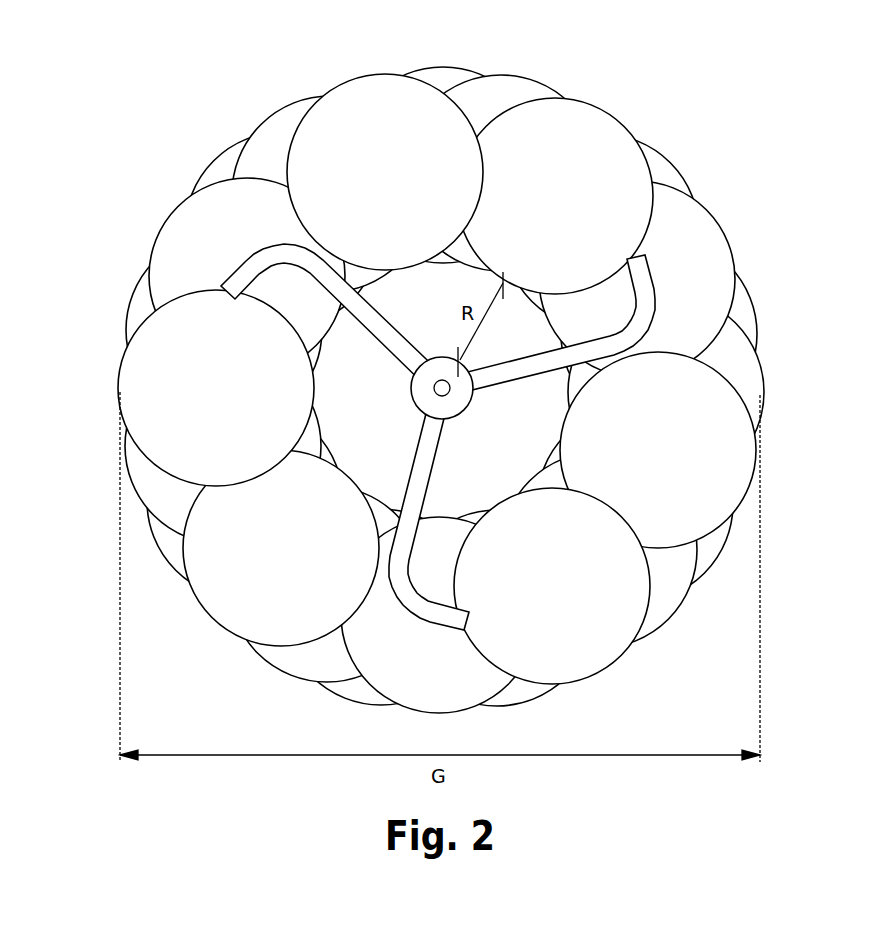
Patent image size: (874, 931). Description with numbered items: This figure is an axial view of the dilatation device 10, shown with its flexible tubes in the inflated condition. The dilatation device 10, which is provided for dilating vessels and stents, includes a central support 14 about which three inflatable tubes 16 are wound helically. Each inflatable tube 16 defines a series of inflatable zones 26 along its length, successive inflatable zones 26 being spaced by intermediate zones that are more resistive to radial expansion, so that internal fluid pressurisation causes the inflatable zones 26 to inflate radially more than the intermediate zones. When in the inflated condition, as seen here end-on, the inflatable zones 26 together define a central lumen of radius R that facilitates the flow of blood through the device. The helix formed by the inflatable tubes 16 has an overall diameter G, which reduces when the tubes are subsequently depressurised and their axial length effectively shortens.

The dilatation device 10 is at (440, 366).
The support 14 is at (475, 360).
The inflatable tube 16 is at (397, 320).
The inflatable zone 26 is at (362, 98).